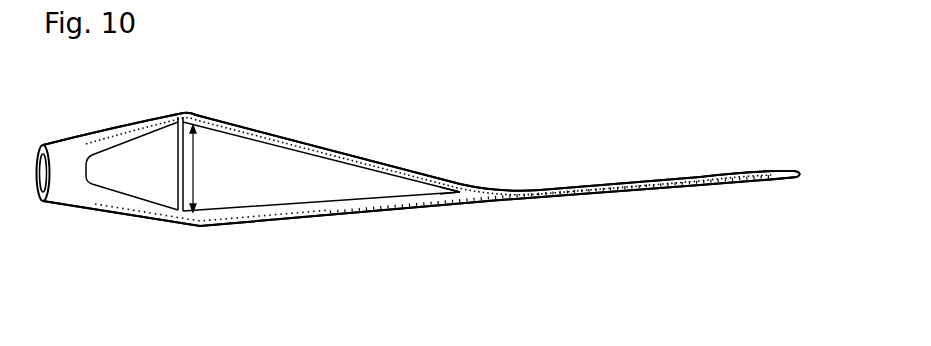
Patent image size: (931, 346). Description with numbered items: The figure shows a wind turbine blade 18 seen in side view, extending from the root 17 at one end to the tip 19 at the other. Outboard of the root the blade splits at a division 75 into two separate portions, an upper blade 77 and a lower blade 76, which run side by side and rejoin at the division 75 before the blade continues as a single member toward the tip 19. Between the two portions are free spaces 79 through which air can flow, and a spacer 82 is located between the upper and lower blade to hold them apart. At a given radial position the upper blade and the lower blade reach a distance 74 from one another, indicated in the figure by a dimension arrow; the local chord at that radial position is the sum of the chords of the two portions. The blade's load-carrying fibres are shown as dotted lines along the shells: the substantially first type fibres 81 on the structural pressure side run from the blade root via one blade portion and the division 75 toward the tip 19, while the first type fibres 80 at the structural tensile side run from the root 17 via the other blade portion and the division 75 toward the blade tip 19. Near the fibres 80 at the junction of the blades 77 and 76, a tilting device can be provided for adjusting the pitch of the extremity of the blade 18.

The blade 18 is at (497, 78).
The root 17 is at (57, 152).
The tip 19 is at (780, 172).
The upper blade 77 is at (122, 130).
The first type fibres at the structural tensile side 80 is at (88, 142).
The lower blade 76 is at (122, 218).
The first type fibres on the structural pressure side 81 is at (97, 212).
The spacer 82 is at (178, 166).
The free spaces 79 is at (273, 166).
The distance 74 is at (199, 163).
The division 75 is at (463, 188).